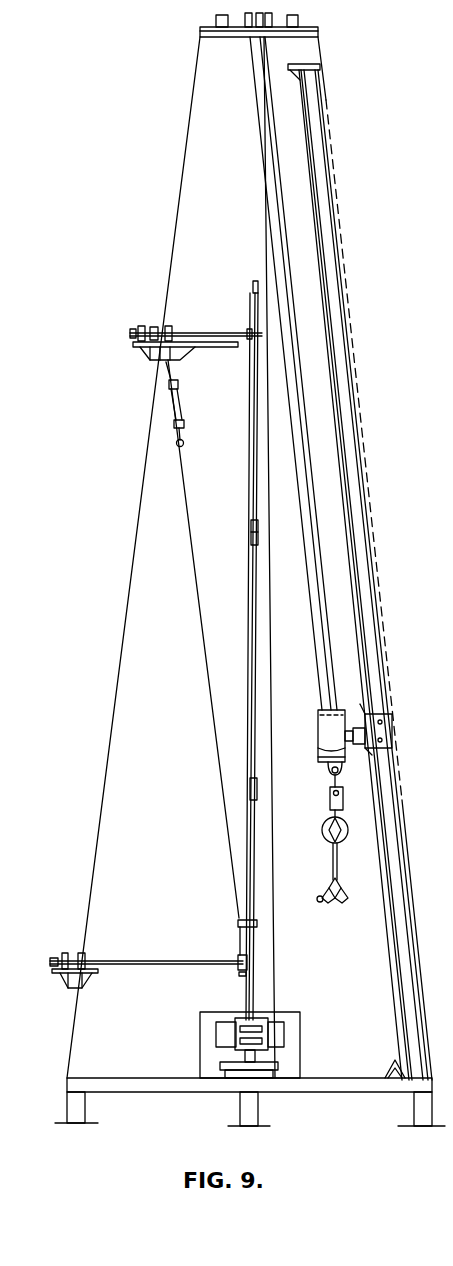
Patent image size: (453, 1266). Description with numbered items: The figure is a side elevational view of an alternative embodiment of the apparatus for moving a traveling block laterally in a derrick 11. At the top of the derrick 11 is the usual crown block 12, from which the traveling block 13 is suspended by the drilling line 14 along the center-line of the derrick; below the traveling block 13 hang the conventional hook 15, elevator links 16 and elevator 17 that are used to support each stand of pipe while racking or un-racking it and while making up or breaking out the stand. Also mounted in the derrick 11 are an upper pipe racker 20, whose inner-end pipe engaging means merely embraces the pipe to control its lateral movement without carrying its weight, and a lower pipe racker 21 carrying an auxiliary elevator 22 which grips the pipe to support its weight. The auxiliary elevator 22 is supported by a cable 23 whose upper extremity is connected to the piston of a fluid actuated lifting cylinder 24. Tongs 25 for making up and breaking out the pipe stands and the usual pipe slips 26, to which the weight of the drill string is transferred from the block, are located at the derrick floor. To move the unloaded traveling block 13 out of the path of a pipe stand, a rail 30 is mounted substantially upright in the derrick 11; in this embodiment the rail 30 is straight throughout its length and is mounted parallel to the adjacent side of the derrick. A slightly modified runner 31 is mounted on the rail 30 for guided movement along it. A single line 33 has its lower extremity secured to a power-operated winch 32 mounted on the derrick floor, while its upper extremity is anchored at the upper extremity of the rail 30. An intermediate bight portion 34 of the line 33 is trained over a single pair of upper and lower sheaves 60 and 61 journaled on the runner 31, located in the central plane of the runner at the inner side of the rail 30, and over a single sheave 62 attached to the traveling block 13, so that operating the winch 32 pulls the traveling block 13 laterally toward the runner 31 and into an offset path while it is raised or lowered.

The derrick 11 is at (136, 536).
The crown block 12 is at (250, 22).
The traveling block 13 is at (318, 716).
The drilling line 14 is at (262, 128).
The hook 15 is at (325, 829).
The elevator links 16 is at (333, 862).
The elevator 17 is at (342, 894).
The upper pipe racker 20 is at (227, 332).
The lower pipe racker 21 is at (190, 960).
The auxiliary elevator 22 is at (239, 921).
The cable 23 is at (192, 516).
The fluid actuated lifting cylinder 24 is at (178, 400).
The tongs 25 is at (244, 1020).
The pipe slips 26 is at (240, 1058).
The rail 30 is at (325, 221).
The runner 31 is at (386, 732).
The winch 32 is at (392, 1068).
The line 33 is at (327, 279).
The bight portion 34 is at (362, 726).
The upper sheave 60 is at (385, 705).
The lower sheave 61 is at (374, 750).
The sheave 62 is at (326, 752).